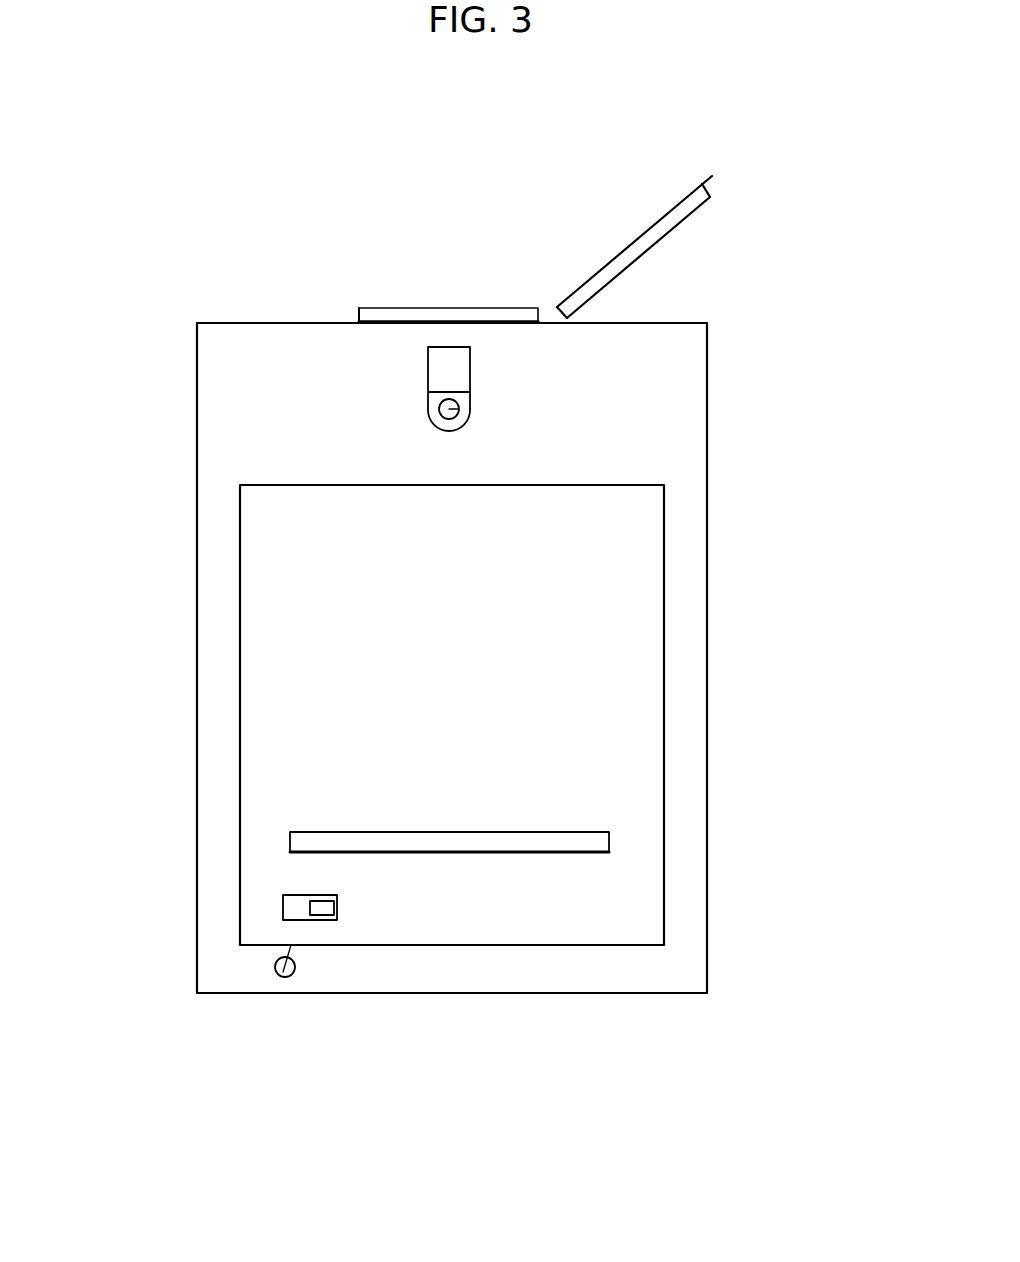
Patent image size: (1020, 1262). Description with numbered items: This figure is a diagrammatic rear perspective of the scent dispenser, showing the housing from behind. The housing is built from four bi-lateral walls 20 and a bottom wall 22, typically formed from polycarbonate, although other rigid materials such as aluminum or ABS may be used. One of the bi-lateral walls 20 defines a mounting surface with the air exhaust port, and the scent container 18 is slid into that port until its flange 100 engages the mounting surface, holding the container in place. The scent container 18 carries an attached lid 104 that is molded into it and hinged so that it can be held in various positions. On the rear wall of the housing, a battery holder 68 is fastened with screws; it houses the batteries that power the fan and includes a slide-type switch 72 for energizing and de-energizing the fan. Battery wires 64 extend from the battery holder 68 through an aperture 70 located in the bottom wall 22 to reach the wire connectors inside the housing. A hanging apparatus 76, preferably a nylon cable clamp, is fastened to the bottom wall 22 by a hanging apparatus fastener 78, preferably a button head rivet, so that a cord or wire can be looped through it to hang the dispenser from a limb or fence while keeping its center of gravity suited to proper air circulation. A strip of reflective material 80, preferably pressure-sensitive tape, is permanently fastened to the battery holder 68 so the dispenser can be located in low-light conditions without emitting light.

The scent container 18 is at (405, 310).
The bi-lateral walls 20 is at (655, 323).
The bottom wall 22 is at (657, 400).
The battery wires 64 is at (293, 950).
The battery holder 68 is at (385, 595).
The aperture 70 is at (295, 977).
The switch 72 is at (321, 904).
The hanging apparatus 76 is at (438, 372).
The hanging apparatus fastener 78 is at (439, 412).
The reflective material 80 is at (588, 842).
The flange 100 is at (358, 315).
The lid 104 is at (657, 232).